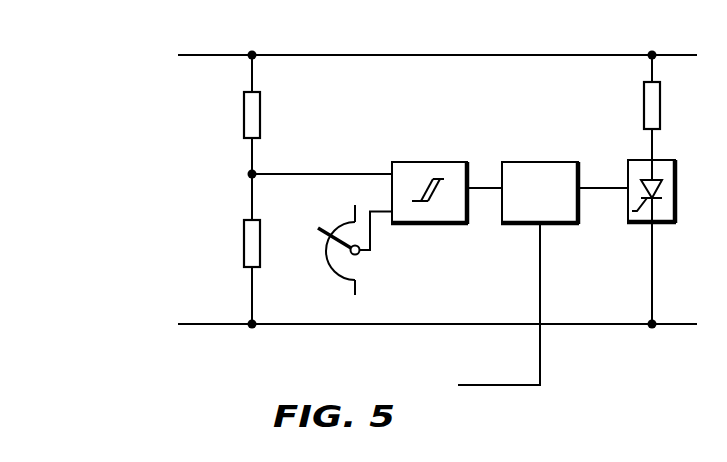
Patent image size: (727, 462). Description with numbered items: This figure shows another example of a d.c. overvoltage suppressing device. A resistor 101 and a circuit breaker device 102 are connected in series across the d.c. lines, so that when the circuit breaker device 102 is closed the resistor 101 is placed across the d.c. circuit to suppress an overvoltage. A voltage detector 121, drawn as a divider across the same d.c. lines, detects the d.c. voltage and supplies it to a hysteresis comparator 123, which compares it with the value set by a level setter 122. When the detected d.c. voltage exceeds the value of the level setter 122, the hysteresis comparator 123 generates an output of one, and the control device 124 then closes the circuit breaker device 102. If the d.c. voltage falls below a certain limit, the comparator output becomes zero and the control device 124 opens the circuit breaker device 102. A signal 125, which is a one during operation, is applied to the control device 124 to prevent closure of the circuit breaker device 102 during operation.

The resistor 101 is at (644, 100).
The circuit breaker device 102 is at (646, 222).
The voltage detector 121 is at (244, 232).
The level setter 122 is at (328, 255).
The hysteresis comparator 123 is at (418, 162).
The control device 124 is at (535, 162).
The "1" signal during operation 125 is at (497, 384).